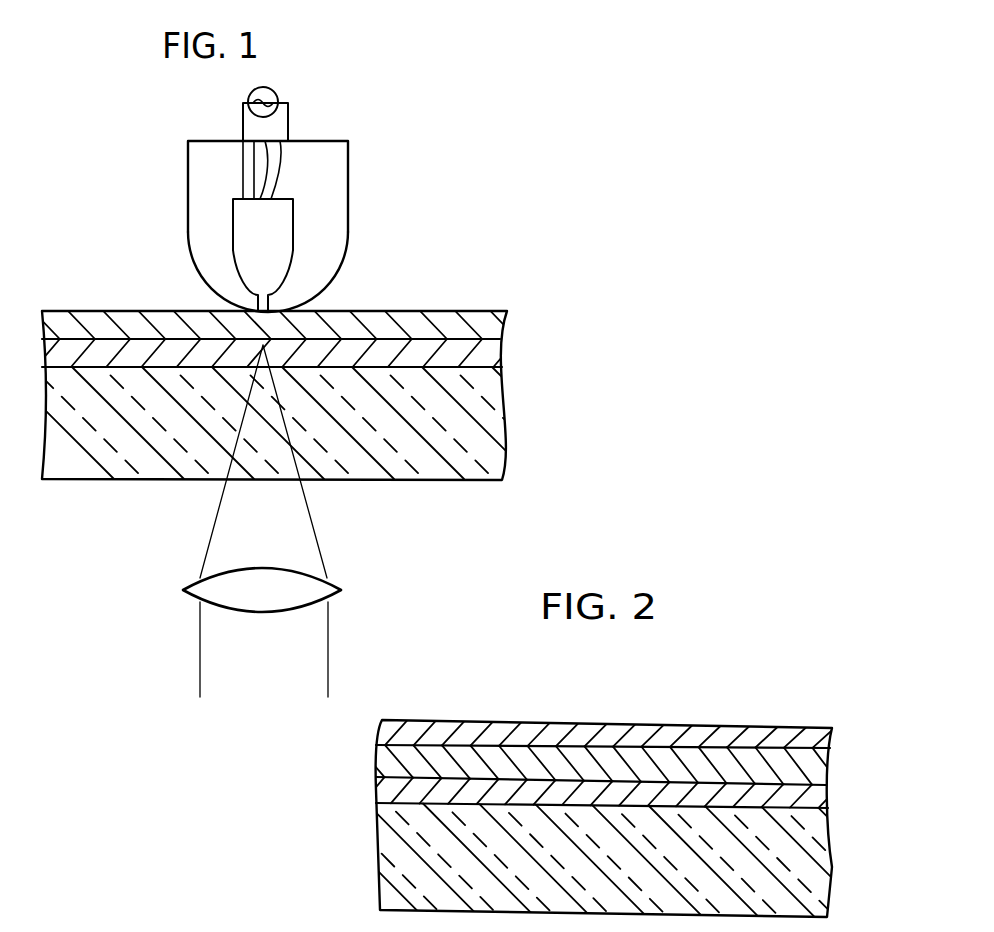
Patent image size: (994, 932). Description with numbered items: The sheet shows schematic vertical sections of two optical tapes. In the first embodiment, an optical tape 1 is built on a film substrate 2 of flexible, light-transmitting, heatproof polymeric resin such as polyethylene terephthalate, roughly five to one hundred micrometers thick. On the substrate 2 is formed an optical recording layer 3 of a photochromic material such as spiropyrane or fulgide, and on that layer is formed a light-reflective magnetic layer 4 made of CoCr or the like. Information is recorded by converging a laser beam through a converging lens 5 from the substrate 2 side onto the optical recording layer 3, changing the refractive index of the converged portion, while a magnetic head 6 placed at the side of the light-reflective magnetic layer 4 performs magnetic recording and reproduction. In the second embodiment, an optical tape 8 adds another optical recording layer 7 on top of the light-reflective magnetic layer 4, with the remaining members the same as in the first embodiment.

In FIG. 1, the optical tape 1 is at (99, 285).
In FIG. 1, the film substrate 2 is at (498, 393).
In FIG. 2, the film substrate 2 is at (823, 857).
In FIG. 1, the optical recording layer 3 is at (487, 357).
In FIG. 2, the optical recording layer 3 is at (817, 800).
In FIG. 1, the light-reflective magnetic layer 4 is at (497, 330).
In FIG. 2, the light-reflective magnetic layer 4 is at (818, 767).
In FIG. 1, the converging lens 5 is at (337, 588).
In FIG. 1, the magnetic head 6 is at (332, 220).
In FIG. 2, the optical recording layer 7 is at (827, 740).
In FIG. 2, the optical tape 8 is at (740, 710).